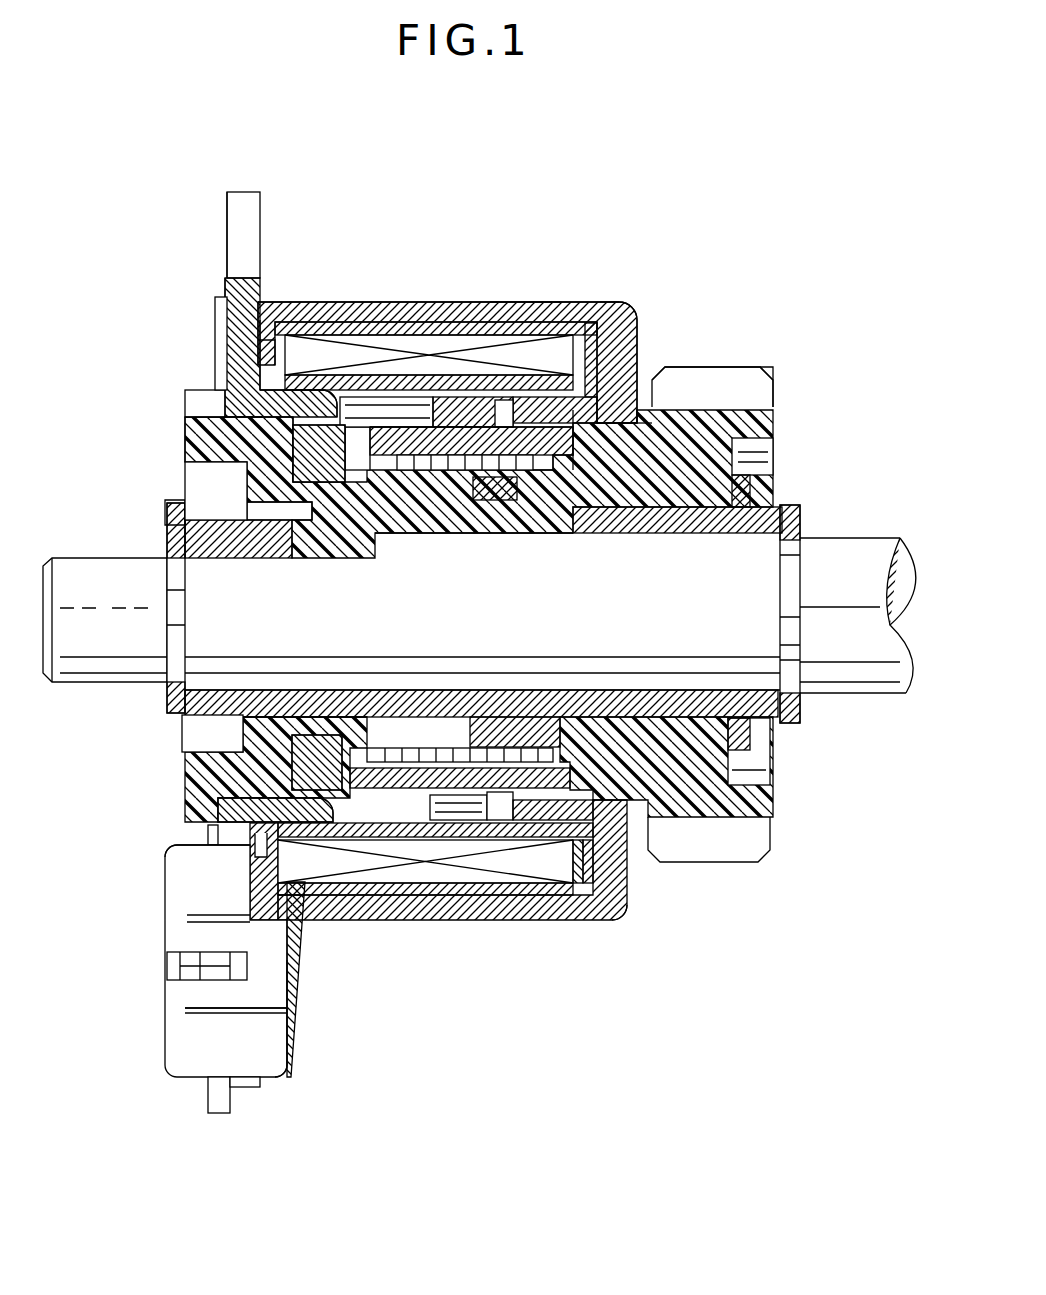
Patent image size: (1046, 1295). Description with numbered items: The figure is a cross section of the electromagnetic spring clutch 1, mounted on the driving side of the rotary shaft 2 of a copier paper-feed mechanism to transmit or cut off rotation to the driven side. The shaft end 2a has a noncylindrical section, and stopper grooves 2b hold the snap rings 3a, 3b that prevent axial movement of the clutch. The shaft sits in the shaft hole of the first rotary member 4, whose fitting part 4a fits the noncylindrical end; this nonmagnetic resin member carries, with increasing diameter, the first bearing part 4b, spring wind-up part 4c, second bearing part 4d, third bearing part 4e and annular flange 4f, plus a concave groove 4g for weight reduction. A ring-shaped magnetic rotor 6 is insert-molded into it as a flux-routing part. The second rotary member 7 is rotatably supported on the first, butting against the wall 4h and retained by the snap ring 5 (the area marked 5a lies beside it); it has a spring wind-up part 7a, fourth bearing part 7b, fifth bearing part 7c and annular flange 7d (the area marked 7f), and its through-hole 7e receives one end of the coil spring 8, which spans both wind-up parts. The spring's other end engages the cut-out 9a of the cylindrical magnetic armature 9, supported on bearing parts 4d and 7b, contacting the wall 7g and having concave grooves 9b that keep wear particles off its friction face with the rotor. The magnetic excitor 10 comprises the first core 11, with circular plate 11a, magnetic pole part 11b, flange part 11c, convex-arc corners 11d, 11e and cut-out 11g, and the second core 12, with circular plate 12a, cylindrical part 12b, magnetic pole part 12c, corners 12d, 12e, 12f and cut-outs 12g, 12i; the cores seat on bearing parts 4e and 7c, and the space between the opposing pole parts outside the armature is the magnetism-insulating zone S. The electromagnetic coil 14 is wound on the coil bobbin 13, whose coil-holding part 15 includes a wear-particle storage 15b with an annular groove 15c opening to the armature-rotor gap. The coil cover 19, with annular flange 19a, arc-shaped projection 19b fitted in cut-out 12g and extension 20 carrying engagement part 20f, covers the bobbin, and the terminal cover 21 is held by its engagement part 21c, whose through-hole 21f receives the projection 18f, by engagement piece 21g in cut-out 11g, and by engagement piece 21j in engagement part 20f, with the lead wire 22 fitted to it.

The motor 1 is at (785, 250).
The rotary shaft 2 is at (880, 678).
The end of rotary shaft 2a is at (70, 580).
The stopper grooves 2b is at (172, 626).
The snap ring 3a is at (795, 518).
The snap ring 3b is at (178, 516).
The first rotary member 4 is at (136, 453).
The fitting part 4a is at (178, 562).
The first bearing part 4b is at (700, 500).
The spring wind-up part 4c is at (412, 472).
The second bearing part 4d is at (300, 505).
The third bearing part 4e is at (210, 410).
The annular flange 4f is at (198, 402).
The concave groove 4g is at (210, 486).
The wall 4h is at (498, 500).
The snap ring 5 is at (773, 456).
The groove wall 5a is at (752, 492).
The rotor 6 is at (305, 478).
The second rotary member 7 is at (803, 384).
The spring wind-up part 7a is at (538, 472).
The fourth bearing part 7b is at (590, 440).
The fifth bearing part 7c is at (640, 450).
The annular flange 7d is at (698, 392).
The through-hole 7e is at (565, 505).
The rotor boss face 7f is at (748, 382).
The wall 7g is at (548, 745).
The coil spring 8 is at (452, 468).
The armature 9 is at (405, 425).
The cut-out part 9a is at (360, 442).
The concave grooves 9b is at (340, 790).
The magnetic excitor 10 is at (473, 180).
The first core 11 is at (235, 192).
The circular plate 11a is at (238, 340).
The magnetic pole part 11b is at (293, 372).
The flange part 11c is at (228, 232).
The convex-arc corner 11d is at (255, 412).
The convex-arc corner 11e is at (345, 392).
The cut-out 11g is at (240, 848).
The second core 12 is at (572, 318).
The circular plate 12a is at (623, 355).
The cylindrical part 12b is at (520, 305).
The magnetic pole part 12c is at (608, 305).
The corner 12d is at (630, 318).
The corner 12e is at (640, 402).
The corner 12f is at (500, 405).
The cut-out 12g is at (221, 340).
The cut-out 12i is at (310, 902).
The coil bobbin 13 is at (268, 345).
The electromagnetic coil 14 is at (442, 355).
The coil-holding part 15 is at (462, 885).
The wear-particle storage 15b is at (578, 861).
The annular groove 15c is at (440, 885).
The projection 18f is at (232, 1010).
The coil cover 19 is at (530, 922).
The annular flange 19a is at (628, 905).
The arc-shaped projection 19b is at (263, 330).
The extension 20 is at (298, 990).
The engagement part 20f is at (245, 1087).
The terminal cover 21 is at (185, 1060).
The engagement part 21c is at (300, 1020).
The through-hole 21f is at (200, 966).
The engagement piece 21g is at (208, 832).
The engagement piece 21j is at (290, 1080).
The lead wire 22 is at (214, 1100).
The magnetism-insulating zone S is at (385, 400).